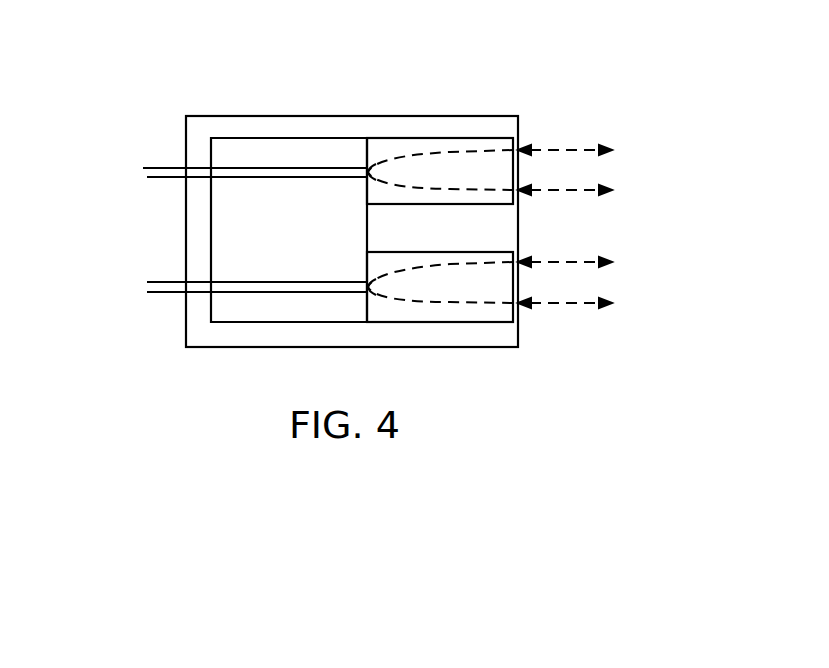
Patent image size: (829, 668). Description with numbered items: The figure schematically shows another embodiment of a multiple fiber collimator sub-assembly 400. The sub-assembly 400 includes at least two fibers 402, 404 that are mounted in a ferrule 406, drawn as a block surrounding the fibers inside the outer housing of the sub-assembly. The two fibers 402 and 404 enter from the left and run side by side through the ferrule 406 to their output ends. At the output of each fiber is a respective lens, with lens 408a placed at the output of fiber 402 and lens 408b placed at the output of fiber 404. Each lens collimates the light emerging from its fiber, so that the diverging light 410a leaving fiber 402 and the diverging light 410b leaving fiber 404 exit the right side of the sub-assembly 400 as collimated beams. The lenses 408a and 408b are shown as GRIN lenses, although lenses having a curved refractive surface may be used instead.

The collimator sub-assembly 400 is at (325, 113).
The fiber 402 is at (168, 168).
The fiber 404 is at (167, 295).
The ferrule 406 is at (212, 227).
The lens 408a is at (463, 136).
The lens 408b is at (455, 322).
The light 410a is at (585, 148).
The light 410b is at (587, 305).